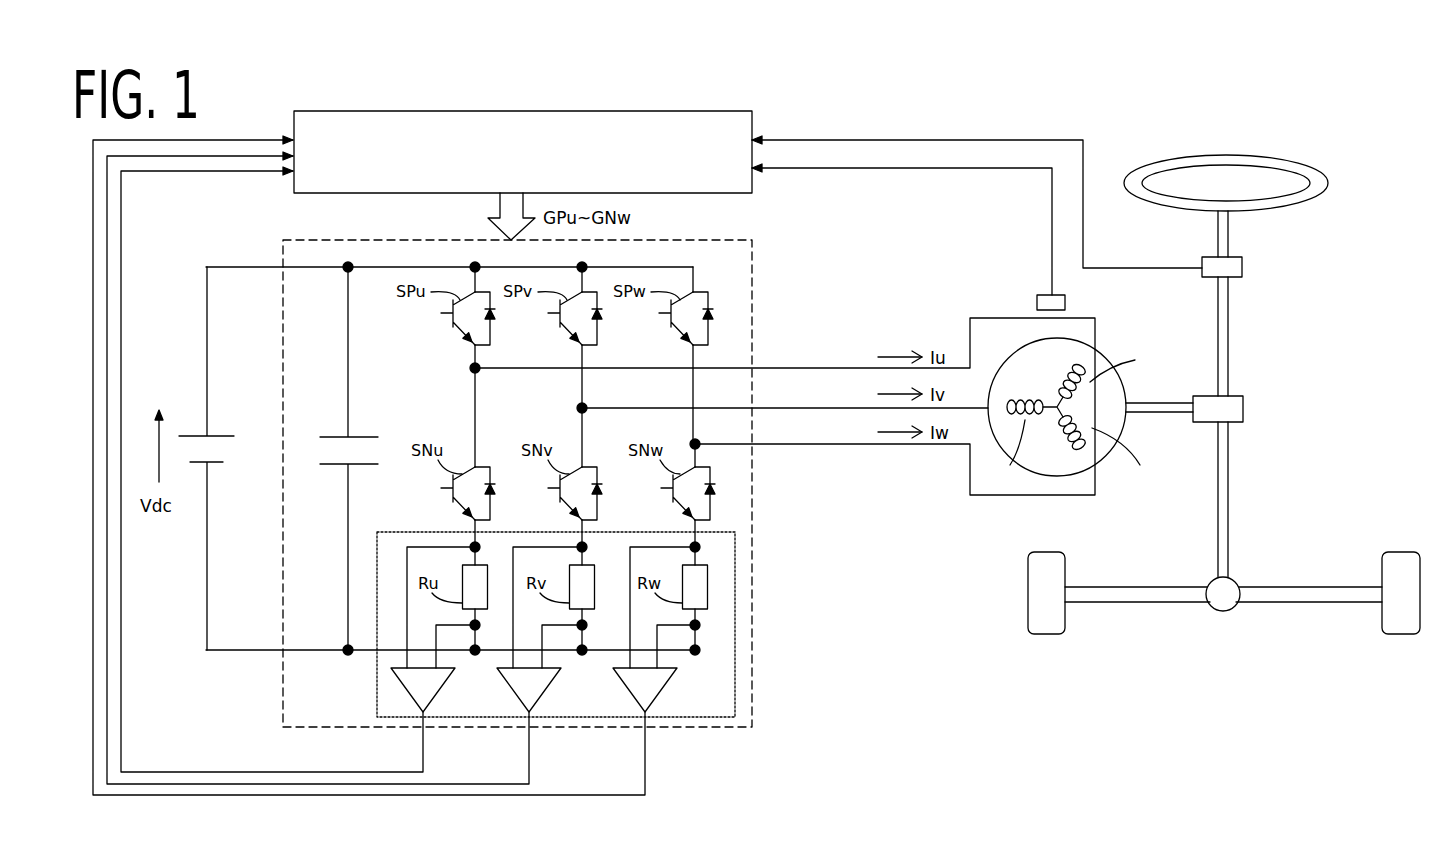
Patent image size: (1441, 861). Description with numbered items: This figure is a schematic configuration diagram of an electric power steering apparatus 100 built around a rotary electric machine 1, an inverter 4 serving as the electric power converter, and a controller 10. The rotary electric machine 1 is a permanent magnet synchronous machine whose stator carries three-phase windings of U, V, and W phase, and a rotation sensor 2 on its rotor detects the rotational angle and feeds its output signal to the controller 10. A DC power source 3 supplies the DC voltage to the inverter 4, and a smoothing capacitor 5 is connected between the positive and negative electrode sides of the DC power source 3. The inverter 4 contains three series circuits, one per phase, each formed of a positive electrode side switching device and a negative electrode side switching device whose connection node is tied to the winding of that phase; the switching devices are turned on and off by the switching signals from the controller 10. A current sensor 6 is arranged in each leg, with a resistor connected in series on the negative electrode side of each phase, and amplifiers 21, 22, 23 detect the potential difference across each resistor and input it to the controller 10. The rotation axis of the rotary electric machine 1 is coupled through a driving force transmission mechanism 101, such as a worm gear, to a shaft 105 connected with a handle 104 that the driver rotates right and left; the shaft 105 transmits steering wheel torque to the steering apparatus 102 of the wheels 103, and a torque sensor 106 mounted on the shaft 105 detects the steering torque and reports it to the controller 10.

The rotary electric machine 1 is at (1092, 368).
The rotation sensor 2 is at (1037, 302).
The DC power source 3 is at (220, 432).
The inverter 4 is at (752, 284).
The smoothing capacitor 5 is at (360, 432).
The current sensor 6 is at (735, 617).
The controller 10 is at (524, 162).
The amplifier 21 is at (440, 686).
The amplifier 22 is at (546, 686).
The amplifier 23 is at (662, 686).
The electric power steering apparatus 100 is at (1378, 218).
The driving force transmission mechanism 101 is at (1243, 398).
The steering apparatus 102 is at (1264, 548).
The wheels 103 is at (1045, 636).
The handle 104 is at (1322, 173).
The shaft 105 is at (1228, 325).
The torque sensor 106 is at (1243, 262).